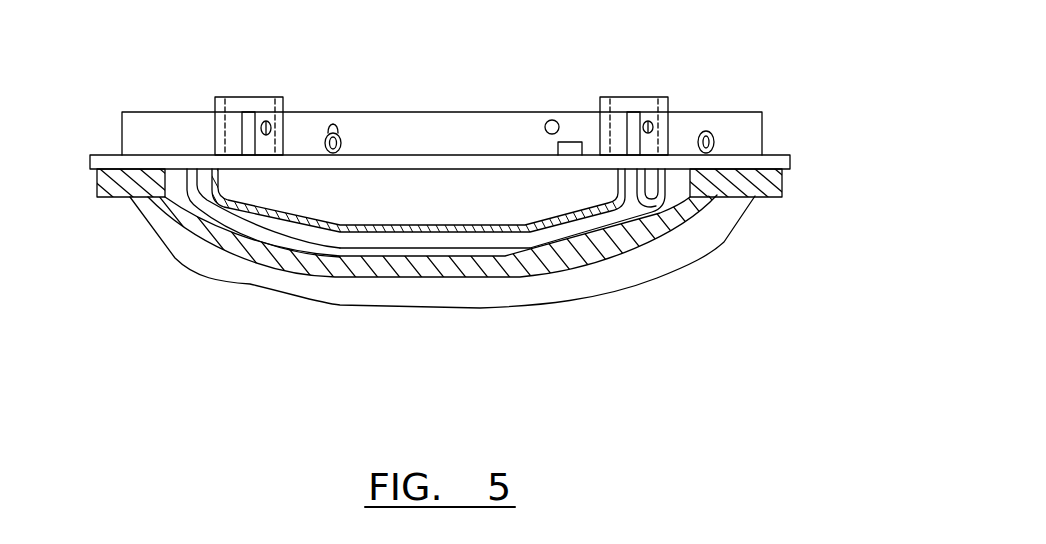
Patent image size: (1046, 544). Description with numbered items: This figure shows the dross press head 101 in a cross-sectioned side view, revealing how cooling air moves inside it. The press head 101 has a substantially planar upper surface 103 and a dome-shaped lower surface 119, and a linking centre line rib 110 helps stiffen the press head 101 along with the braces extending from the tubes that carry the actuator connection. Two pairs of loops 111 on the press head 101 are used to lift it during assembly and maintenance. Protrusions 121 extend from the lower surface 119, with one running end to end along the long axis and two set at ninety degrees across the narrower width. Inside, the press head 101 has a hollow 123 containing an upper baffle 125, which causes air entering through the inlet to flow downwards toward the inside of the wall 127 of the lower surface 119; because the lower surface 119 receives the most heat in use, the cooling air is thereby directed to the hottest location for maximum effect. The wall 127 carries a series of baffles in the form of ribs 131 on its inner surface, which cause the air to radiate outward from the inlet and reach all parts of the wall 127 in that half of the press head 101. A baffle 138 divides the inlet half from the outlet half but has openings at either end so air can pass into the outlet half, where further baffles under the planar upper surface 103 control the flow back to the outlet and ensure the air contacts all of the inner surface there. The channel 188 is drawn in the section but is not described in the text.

The press head 101 is at (700, 287).
The upper surface 103 is at (481, 161).
The centre line rib 110 is at (398, 138).
The loops 111 is at (345, 133).
The lower surface 119 is at (175, 224).
The protrusions 121 is at (243, 260).
The hollow 123 is at (452, 238).
The upper baffle 125 is at (403, 193).
The wall 127 is at (508, 262).
The ribs 131 is at (602, 222).
The baffle 138 is at (300, 227).
The channel 188 is at (624, 216).